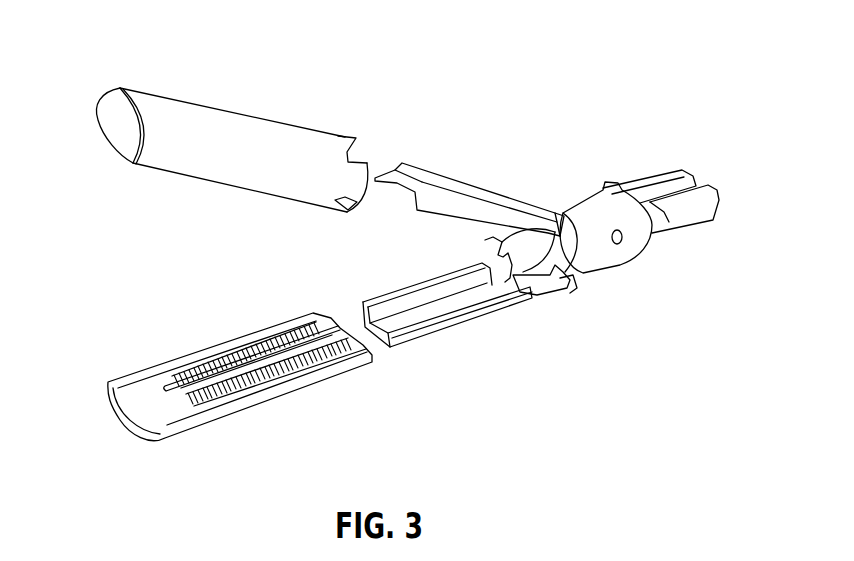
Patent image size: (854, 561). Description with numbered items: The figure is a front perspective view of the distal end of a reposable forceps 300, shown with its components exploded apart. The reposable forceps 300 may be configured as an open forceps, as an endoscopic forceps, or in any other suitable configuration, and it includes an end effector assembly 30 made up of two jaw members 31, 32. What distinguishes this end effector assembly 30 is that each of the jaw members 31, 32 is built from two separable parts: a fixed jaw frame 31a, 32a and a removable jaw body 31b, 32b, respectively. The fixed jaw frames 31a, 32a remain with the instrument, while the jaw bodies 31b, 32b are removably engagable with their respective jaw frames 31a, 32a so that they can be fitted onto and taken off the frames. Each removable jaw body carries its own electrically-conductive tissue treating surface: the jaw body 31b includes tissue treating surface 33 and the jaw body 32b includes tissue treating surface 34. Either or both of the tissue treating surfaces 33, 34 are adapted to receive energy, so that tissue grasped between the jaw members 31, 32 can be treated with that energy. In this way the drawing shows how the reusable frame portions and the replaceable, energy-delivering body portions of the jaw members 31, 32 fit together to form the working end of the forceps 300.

The reposable forceps 300 is at (583, 47).
The end effector assembly 30 is at (710, 168).
The jaw member 31 is at (444, 150).
The fixed jaw frame 31a is at (482, 192).
The removable jaw body 31b is at (235, 125).
The electrically-conductive tissue treating surface 33 is at (235, 188).
The jaw member 32 is at (438, 352).
The fixed jaw frame 32a is at (458, 325).
The removable jaw body 32b is at (273, 400).
The electrically-conductive tissue treating surface 34 is at (230, 348).